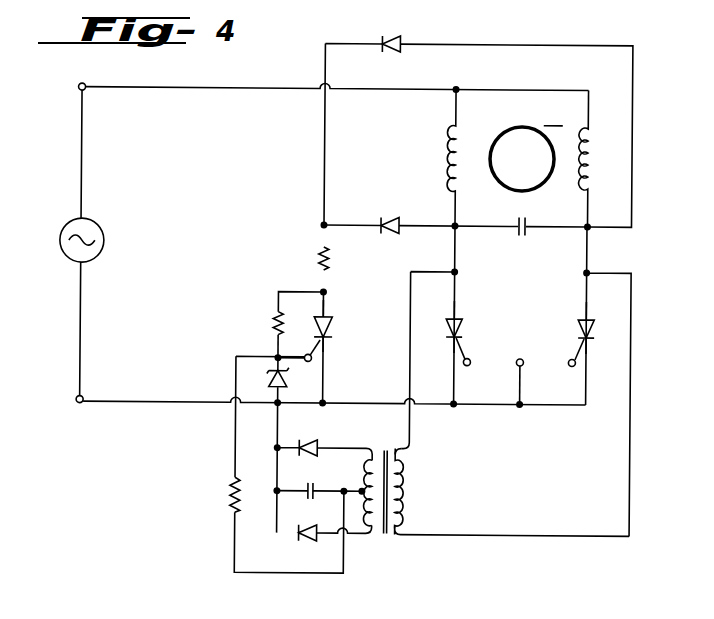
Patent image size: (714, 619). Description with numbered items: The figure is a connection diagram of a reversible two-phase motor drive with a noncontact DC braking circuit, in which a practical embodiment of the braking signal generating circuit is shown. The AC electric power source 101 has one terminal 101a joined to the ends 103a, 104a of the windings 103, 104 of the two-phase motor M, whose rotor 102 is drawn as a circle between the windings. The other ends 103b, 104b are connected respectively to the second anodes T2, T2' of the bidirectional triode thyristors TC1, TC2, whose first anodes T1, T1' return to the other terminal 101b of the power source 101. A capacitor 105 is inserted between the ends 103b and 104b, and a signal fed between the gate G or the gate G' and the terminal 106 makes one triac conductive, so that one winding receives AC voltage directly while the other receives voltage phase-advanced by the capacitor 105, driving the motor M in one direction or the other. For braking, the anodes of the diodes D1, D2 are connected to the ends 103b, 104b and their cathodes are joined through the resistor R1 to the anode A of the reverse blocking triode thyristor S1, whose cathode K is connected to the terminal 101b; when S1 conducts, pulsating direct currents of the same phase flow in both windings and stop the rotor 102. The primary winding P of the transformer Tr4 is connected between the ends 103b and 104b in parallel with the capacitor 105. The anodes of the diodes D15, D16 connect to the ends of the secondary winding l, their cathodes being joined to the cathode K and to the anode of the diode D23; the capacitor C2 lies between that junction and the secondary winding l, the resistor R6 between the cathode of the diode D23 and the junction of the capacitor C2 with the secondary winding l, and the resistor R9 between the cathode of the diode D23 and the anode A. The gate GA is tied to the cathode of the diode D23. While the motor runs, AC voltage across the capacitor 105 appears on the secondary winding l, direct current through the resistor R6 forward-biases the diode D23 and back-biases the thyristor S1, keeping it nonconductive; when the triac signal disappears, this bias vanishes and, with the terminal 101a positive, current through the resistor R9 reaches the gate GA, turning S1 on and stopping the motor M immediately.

The AC electric power source 101 is at (60, 242).
The terminal of power source 101a is at (78, 87).
The terminal of power source 101b is at (78, 400).
The rotor 102 is at (500, 133).
The winding 103 is at (448, 164).
The end of winding 103a is at (462, 83).
The end of winding 103b is at (454, 222).
The winding 104 is at (590, 157).
The end of winding 104a is at (588, 88).
The end of winding 104b is at (600, 216).
The capacitor 105 is at (516, 215).
The terminal 106 is at (527, 353).
The two-phase motor M is at (553, 115).
The diode D1 is at (390, 221).
The diode D2 is at (388, 52).
The diode D15 is at (308, 437).
The diode D16 is at (305, 540).
The diode D23 is at (264, 396).
The resistor R1 is at (321, 257).
The resistor R9 is at (273, 326).
The resistor R6 is at (230, 493).
The capacitor C2 is at (312, 482).
The reverse blocking triode thyristor S1 is at (334, 327).
The anode of thyristor A is at (330, 304).
The cathode of thyristor K is at (327, 343).
The gate of thyristor GA is at (308, 362).
The bidirectional triode thyristor TC1 is at (450, 326).
The bidirectional triode thyristor TC2 is at (578, 325).
The first anode of thyristor T1 is at (437, 357).
The second anode of thyristor T2 is at (436, 305).
The first anode of thyristor T1' is at (604, 356).
The second anode of thyristor T2' is at (606, 302).
The gate of thyristor G is at (471, 363).
The gate of thyristor G' is at (567, 364).
The transformer Tr4 is at (386, 475).
The secondary winding l is at (366, 478).
The primary winding P is at (405, 480).